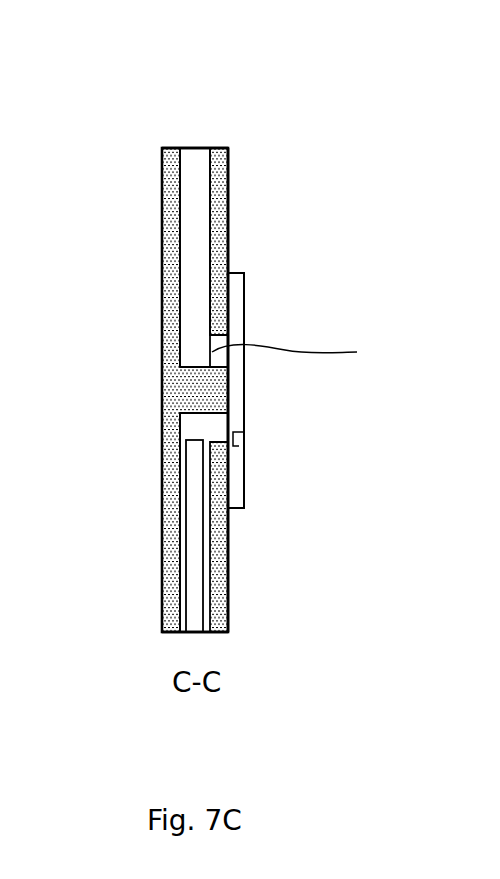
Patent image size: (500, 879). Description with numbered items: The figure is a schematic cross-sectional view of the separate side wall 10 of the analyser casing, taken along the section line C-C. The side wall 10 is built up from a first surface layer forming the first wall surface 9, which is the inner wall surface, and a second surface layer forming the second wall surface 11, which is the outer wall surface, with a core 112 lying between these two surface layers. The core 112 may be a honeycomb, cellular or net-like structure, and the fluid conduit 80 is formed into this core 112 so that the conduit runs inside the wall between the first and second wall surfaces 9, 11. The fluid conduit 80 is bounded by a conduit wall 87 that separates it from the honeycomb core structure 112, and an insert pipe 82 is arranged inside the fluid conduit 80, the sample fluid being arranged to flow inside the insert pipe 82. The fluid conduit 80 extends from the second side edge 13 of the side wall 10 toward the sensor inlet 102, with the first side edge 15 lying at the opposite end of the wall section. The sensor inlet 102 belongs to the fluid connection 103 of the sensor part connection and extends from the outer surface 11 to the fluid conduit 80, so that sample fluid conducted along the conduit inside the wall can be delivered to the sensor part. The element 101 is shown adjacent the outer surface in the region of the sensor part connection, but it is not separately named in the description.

The first wall surface 9 is at (163, 180).
The conduit wall 87 is at (183, 215).
The second side edge 13 is at (198, 148).
The side wall 10 is at (228, 148).
The second wall surface 11 is at (228, 185).
The fluid conduit 80 is at (190, 253).
The side member 101 is at (245, 288).
The core 112 is at (178, 395).
The sensor inlet 102 is at (213, 427).
The fluid connection 103 is at (245, 432).
The insert pipe 82 is at (202, 577).
The first side edge 15 is at (220, 632).